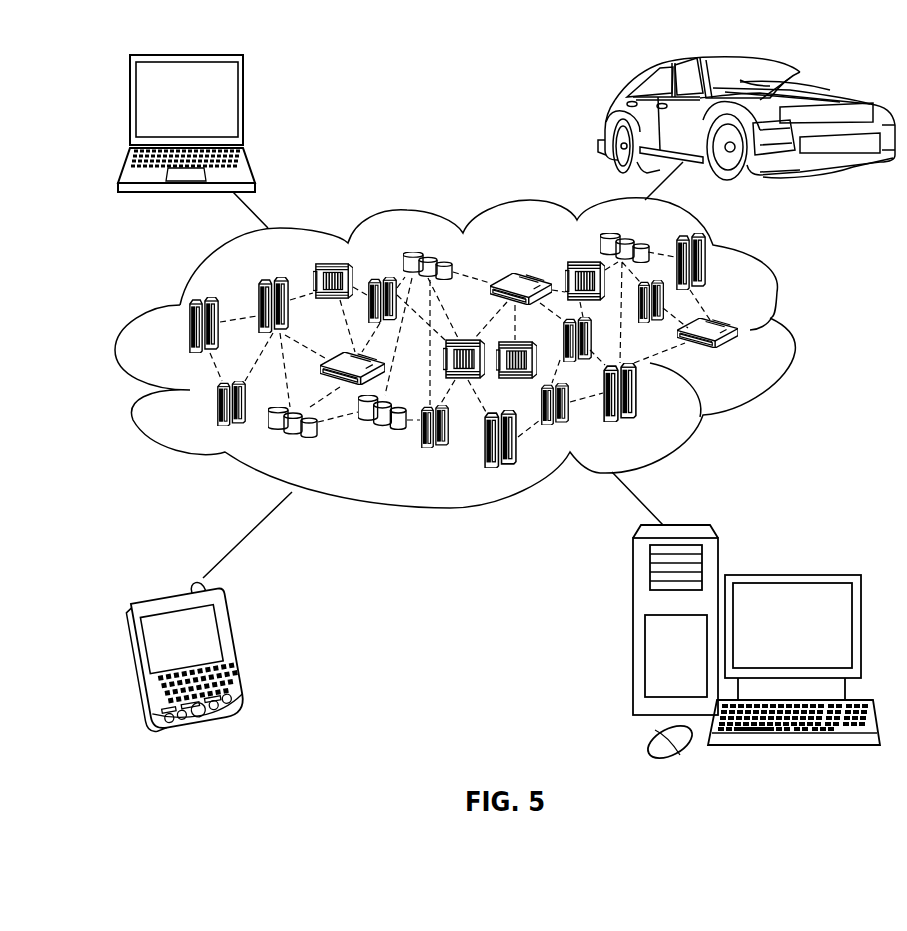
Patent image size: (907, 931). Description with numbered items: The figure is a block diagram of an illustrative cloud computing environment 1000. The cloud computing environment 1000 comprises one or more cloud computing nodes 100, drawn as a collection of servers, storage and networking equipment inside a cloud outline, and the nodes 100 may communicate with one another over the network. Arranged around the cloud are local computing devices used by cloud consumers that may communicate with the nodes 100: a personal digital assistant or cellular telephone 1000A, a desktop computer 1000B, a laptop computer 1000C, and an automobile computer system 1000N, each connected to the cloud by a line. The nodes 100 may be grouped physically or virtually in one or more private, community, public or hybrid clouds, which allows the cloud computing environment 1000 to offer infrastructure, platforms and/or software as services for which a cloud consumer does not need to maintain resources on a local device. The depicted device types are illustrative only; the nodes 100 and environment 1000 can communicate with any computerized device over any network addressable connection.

The cloud computing nodes 100 is at (740, 357).
The cloud computing environment 1000 is at (793, 332).
The personal digital assistant (PDA) or cellular telephone 1000A is at (240, 648).
The desktop computer 1000B is at (790, 572).
The laptop computer 1000C is at (245, 107).
The automobile computer system 1000N is at (608, 118).